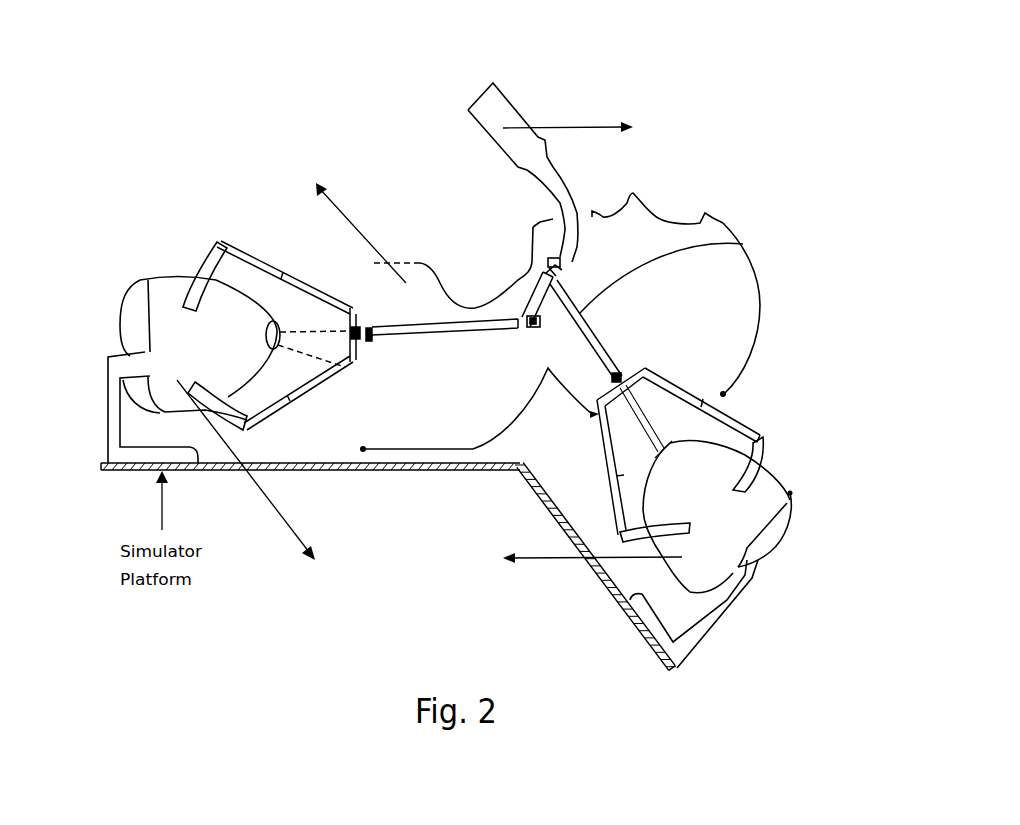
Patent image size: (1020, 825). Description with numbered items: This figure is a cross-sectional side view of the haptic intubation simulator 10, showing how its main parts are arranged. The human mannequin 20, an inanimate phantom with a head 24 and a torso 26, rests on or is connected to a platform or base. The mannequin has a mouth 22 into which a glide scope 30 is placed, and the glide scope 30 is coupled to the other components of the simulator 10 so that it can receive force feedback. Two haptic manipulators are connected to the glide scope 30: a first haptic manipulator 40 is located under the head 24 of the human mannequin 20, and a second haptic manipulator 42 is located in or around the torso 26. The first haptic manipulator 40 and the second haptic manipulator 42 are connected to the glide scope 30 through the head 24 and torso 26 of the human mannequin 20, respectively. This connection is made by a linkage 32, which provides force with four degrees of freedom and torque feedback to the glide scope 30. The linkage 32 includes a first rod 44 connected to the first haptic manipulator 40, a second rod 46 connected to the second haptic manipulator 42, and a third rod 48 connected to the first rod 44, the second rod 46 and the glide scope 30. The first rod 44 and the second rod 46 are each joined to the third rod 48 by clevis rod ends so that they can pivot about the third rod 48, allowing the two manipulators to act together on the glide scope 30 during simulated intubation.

The haptic intubation simulator 10 is at (110, 98).
The human mannequin 20 is at (718, 218).
The mouth 22 is at (563, 220).
The head 24 is at (757, 302).
The torso 26 is at (418, 453).
The glide scope 30 is at (477, 100).
The linkage 32 is at (533, 352).
The first haptic manipulator 40 is at (790, 547).
The second haptic manipulator 42 is at (170, 275).
The first rod 44 is at (743, 244).
The second rod 46 is at (398, 325).
The third rod 48 is at (530, 302).